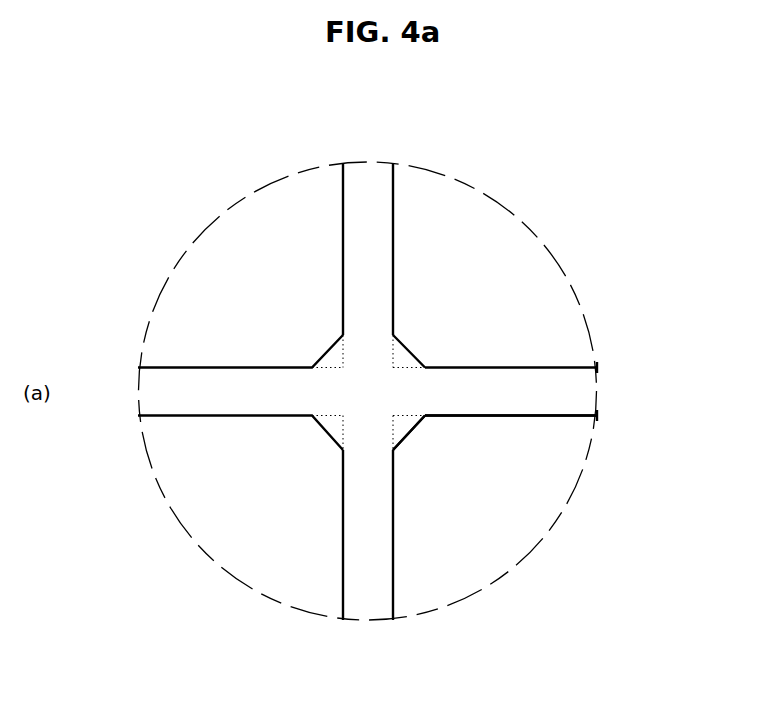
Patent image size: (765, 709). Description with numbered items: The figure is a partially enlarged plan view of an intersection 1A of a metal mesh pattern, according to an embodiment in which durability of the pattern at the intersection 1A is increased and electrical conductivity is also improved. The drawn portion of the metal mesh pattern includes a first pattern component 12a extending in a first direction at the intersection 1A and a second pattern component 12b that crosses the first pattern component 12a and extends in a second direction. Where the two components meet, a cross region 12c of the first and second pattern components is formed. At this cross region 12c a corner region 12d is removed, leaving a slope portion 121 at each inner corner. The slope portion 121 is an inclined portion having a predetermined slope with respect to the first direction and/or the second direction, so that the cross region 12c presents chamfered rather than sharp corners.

The intersection 1A is at (527, 226).
The first pattern component 12a is at (580, 393).
The second pattern component 12b is at (351, 556).
The cross region 12c is at (477, 413).
The corner region 12d is at (490, 417).
The slope portion 121 is at (410, 428).